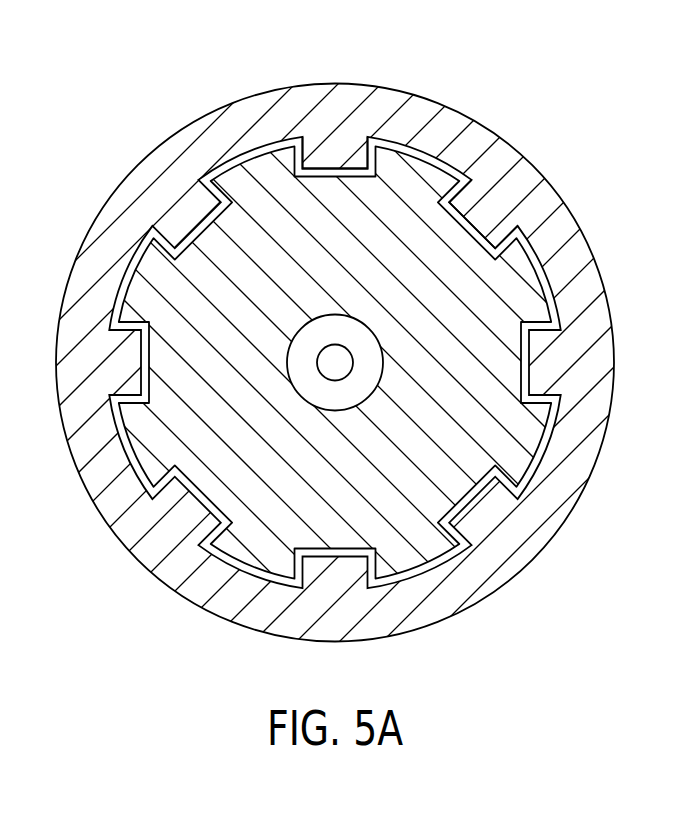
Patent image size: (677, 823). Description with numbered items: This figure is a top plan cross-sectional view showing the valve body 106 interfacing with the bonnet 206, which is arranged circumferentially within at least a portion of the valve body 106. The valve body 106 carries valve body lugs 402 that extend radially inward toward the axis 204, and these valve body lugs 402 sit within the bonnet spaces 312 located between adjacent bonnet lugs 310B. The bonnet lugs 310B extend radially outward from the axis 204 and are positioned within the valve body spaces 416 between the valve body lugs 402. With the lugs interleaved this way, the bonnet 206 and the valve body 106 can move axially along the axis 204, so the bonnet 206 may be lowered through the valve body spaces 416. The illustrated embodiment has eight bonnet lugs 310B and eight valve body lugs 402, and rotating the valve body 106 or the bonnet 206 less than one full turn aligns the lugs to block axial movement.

The valve body 106 is at (462, 76).
The bonnet spaces 312 is at (298, 152).
The bonnet lugs 310B is at (407, 173).
The valve body lugs 402 is at (487, 215).
The valve body spaces 416 is at (552, 278).
The bonnet 206 is at (280, 276).
The axis 204 is at (335, 363).